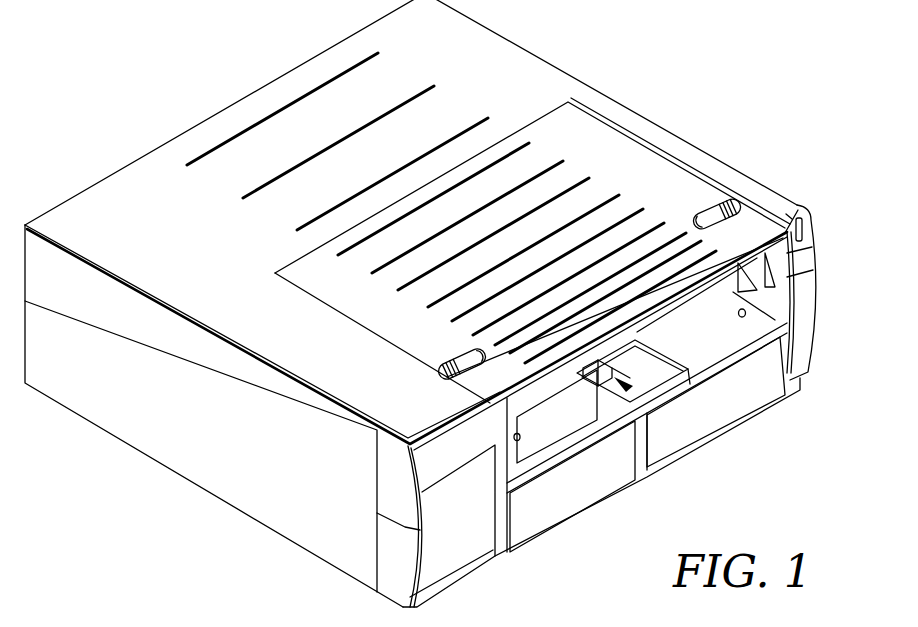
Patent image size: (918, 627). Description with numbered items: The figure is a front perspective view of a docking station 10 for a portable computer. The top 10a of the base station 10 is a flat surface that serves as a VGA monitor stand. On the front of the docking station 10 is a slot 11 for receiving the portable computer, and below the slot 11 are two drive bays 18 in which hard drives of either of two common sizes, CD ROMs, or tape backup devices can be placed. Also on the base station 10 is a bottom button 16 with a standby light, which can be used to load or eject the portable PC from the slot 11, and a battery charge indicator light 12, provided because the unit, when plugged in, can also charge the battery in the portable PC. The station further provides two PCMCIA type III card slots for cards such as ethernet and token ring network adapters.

The docking station 10 is at (186, 67).
The top of the base station 10a is at (518, 62).
The slot 11 is at (553, 428).
The battery charge indicator light 12 is at (805, 233).
The bottom button 16 is at (808, 269).
The drive bays 18 is at (572, 497).